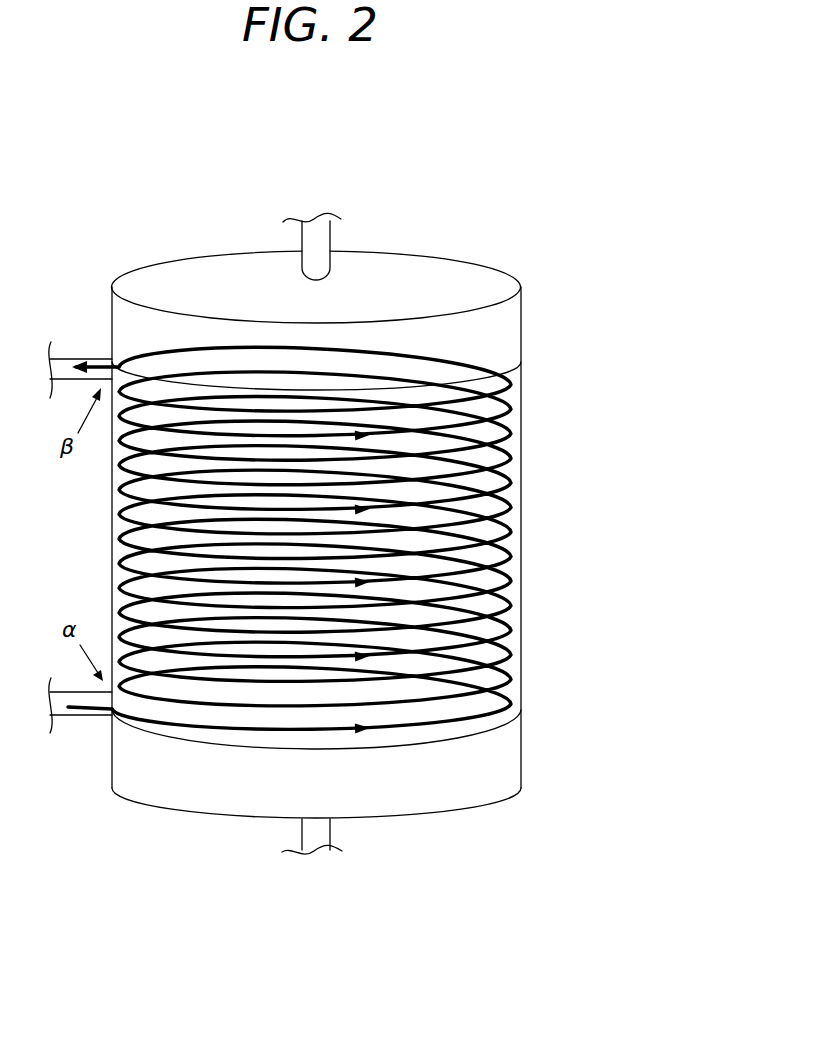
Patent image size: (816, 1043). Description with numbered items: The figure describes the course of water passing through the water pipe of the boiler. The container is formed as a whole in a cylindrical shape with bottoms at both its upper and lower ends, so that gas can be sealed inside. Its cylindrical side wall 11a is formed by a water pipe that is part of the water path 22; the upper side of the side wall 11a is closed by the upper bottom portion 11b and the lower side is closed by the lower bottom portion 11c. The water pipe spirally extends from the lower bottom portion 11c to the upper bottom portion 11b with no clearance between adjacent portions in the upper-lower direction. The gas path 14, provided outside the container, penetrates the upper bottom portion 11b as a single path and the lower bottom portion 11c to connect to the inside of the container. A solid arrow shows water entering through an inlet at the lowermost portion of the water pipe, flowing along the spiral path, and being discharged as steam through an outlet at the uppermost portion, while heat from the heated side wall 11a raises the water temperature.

The side wall 11a is at (112, 535).
The upper bottom portion 11b is at (197, 262).
The lower bottom portion 11c is at (172, 790).
The gas path 14 is at (330, 238).
The water path 22 is at (67, 352).